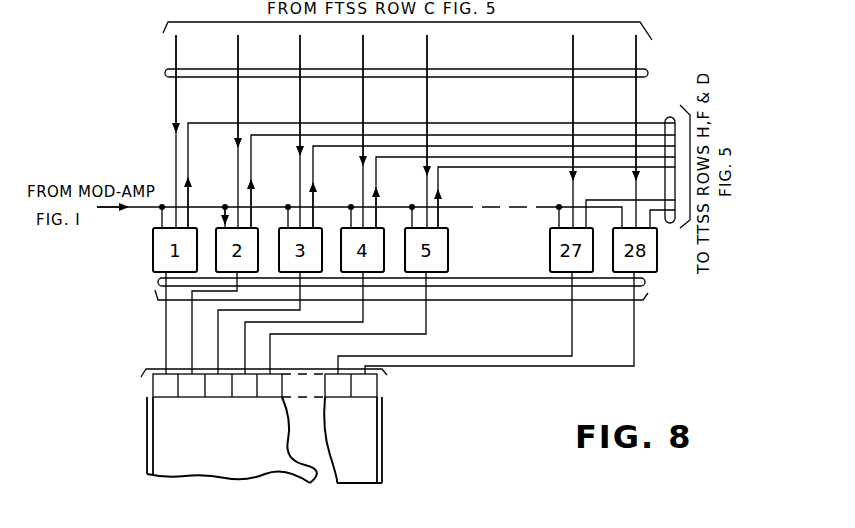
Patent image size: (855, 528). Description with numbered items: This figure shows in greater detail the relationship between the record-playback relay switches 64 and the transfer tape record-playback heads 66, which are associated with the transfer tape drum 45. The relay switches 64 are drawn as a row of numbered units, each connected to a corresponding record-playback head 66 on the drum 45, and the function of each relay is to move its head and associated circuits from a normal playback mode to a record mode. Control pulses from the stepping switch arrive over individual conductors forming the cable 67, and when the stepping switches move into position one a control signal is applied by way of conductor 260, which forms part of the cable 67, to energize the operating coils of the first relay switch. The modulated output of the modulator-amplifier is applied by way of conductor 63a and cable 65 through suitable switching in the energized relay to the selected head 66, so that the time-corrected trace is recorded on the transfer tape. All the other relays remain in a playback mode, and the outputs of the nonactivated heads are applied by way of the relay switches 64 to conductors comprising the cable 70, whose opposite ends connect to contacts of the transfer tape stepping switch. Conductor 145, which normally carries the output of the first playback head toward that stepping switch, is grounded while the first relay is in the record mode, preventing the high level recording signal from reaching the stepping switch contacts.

The conductor 260 is at (175, 52).
The cable 67 is at (165, 73).
The conductor 145 is at (206, 115).
The conductor 63a is at (143, 208).
The cable 65 is at (158, 280).
The record-playback relay switches 64 is at (646, 302).
The transfer tape record-playback heads 66 is at (383, 372).
The drum 45 is at (385, 437).
The cable 70 is at (668, 224).